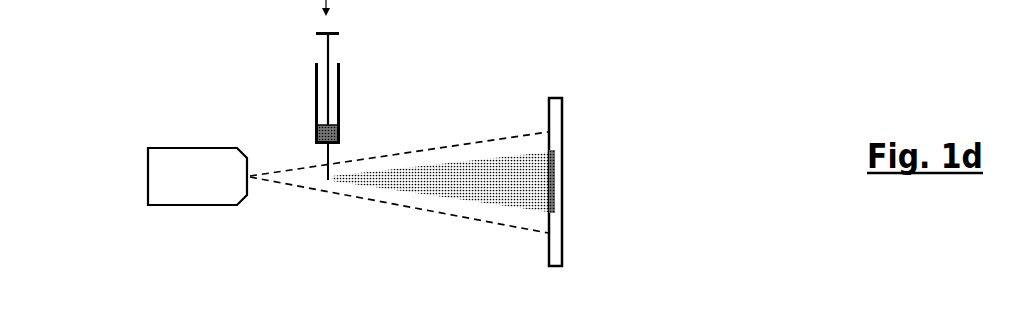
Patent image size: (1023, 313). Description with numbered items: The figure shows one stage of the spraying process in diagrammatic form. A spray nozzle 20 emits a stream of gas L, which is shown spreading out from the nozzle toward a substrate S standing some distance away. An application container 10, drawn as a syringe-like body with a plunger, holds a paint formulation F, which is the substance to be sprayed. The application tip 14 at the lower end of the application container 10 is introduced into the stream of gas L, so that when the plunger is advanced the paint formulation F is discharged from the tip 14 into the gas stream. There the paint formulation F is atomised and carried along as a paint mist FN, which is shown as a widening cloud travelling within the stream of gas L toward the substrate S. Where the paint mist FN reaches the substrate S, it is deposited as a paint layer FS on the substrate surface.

The spray nozzle 20 is at (200, 163).
The application container 10 is at (306, 87).
The paint formulation F is at (313, 126).
The application tip 14 is at (323, 176).
The stream of gas L is at (410, 148).
The paint mist FN is at (480, 148).
The substrate S is at (563, 113).
The paint layer FS is at (552, 157).